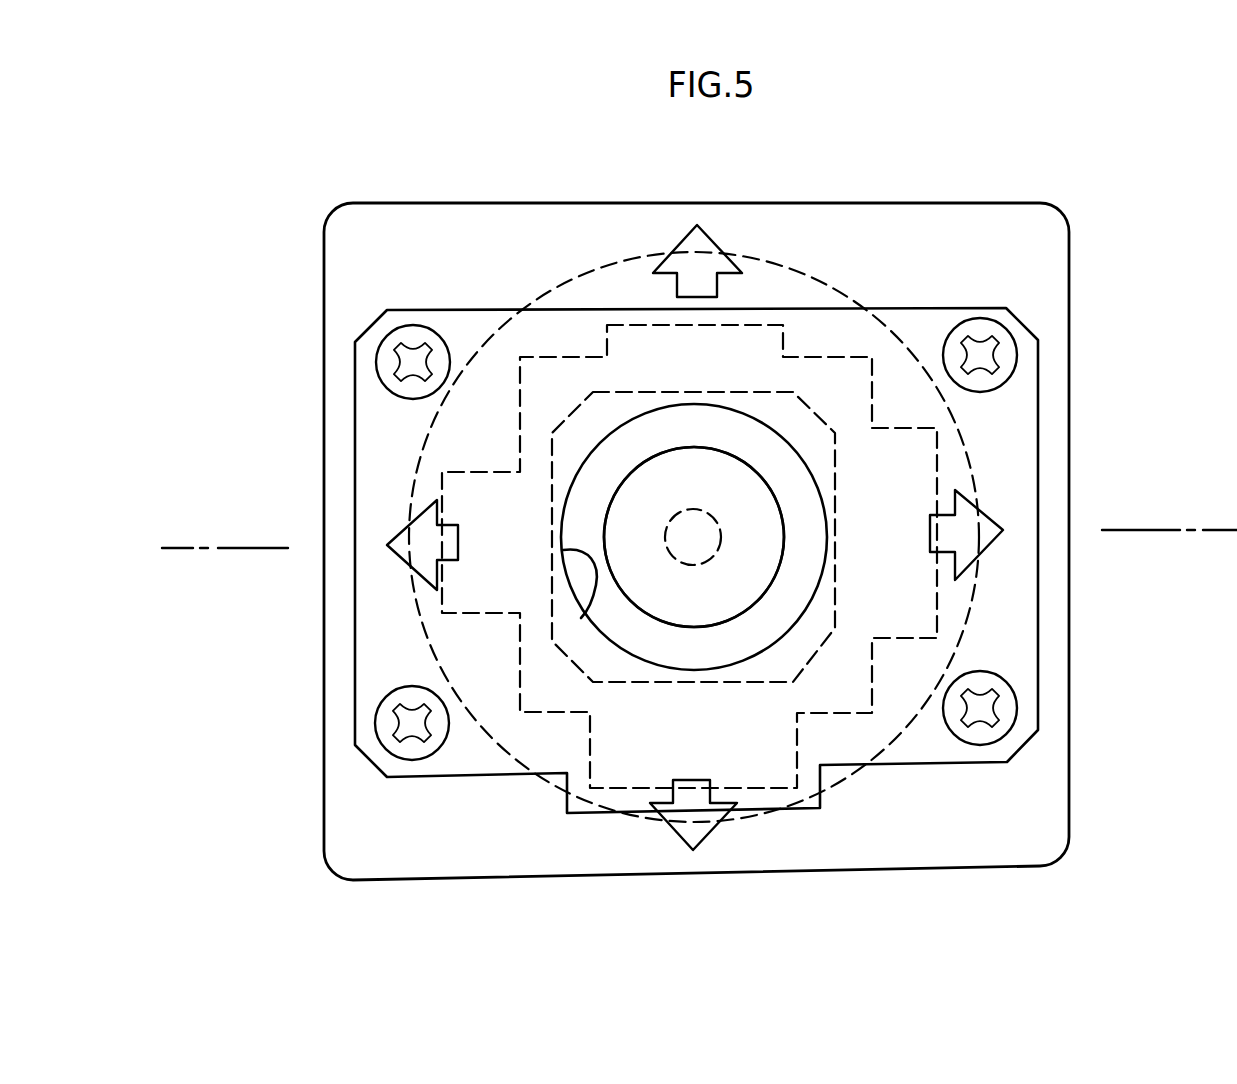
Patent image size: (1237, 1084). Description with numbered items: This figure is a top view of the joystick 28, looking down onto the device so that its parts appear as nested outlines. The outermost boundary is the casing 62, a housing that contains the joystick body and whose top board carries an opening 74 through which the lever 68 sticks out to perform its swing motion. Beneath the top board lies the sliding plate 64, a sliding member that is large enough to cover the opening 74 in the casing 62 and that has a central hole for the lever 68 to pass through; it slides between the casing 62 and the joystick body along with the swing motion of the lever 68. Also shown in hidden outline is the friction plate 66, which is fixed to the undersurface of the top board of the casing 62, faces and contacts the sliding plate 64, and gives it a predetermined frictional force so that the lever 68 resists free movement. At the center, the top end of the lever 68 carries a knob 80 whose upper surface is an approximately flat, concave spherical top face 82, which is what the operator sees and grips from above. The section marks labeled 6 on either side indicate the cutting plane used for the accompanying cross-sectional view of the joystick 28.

The section line VI-VI 6 is at (173, 535).
The joystick 28 is at (965, 180).
The casing 62 is at (1072, 308).
The sliding plate 64 is at (872, 668).
The friction plate 66 is at (973, 467).
The lever 68 is at (667, 556).
The opening 74 is at (583, 619).
The knob 80 is at (762, 598).
The top face 82 is at (717, 595).